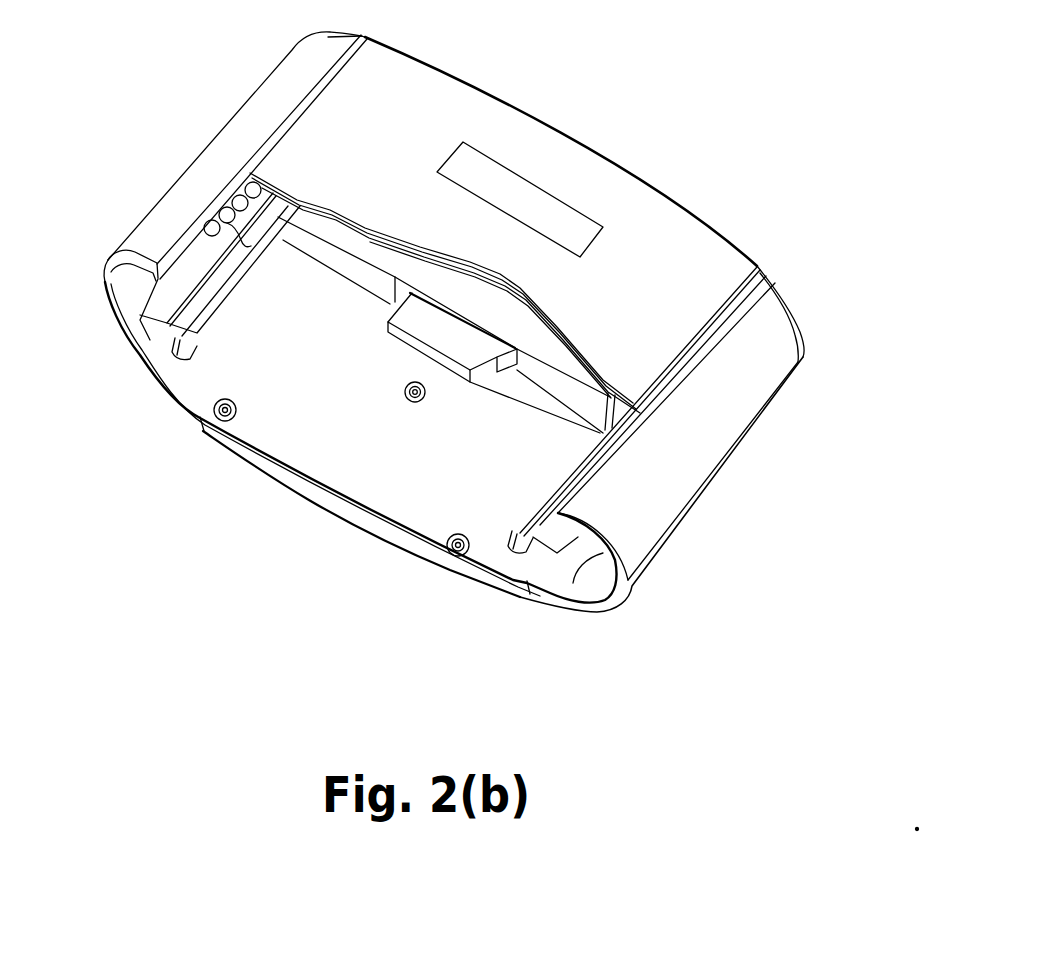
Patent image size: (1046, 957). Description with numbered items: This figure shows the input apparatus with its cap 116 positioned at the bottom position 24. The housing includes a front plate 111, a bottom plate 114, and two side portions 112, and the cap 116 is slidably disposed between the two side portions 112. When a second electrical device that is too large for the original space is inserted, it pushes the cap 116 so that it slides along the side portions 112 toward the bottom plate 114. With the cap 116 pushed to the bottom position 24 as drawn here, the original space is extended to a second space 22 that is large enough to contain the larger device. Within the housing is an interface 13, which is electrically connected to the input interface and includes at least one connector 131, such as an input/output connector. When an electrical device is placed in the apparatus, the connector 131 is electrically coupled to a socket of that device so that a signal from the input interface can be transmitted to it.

The cap 116 is at (443, 103).
The bottom plate 114 is at (672, 200).
The bottom position 24 is at (672, 330).
The side portions 112 is at (713, 469).
The second space 22 is at (262, 361).
The interface 13 is at (437, 338).
The connector 131 is at (473, 357).
The front plate 111 is at (417, 560).